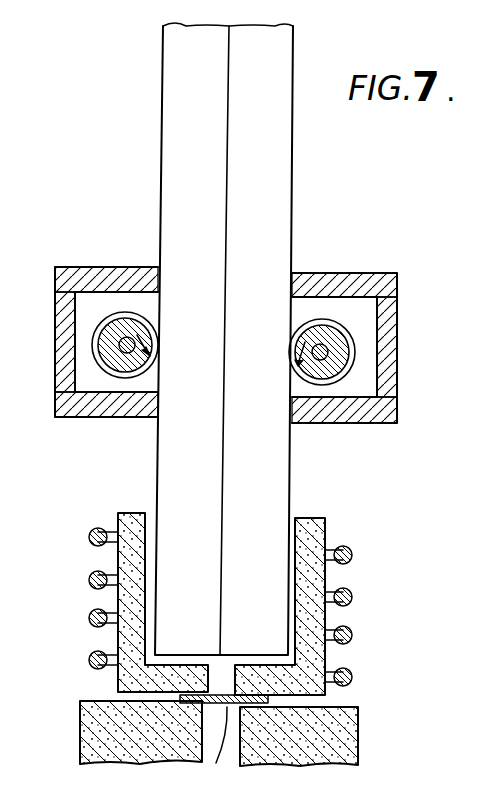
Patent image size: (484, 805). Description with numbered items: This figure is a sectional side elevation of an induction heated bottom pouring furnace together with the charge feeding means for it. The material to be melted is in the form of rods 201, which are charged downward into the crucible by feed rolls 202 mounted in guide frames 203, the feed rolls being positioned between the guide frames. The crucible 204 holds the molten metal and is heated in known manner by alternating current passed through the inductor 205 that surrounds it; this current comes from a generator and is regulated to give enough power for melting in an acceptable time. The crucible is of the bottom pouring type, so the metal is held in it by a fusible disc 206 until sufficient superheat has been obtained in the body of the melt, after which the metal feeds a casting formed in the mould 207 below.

The rods 201 is at (163, 135).
The feed rolls 202 is at (103, 343).
The guide frames 203 is at (76, 273).
The crucible 204 is at (325, 524).
The inductor 205 is at (92, 580).
The fusible disc 206 is at (222, 762).
The mould 207 is at (358, 746).